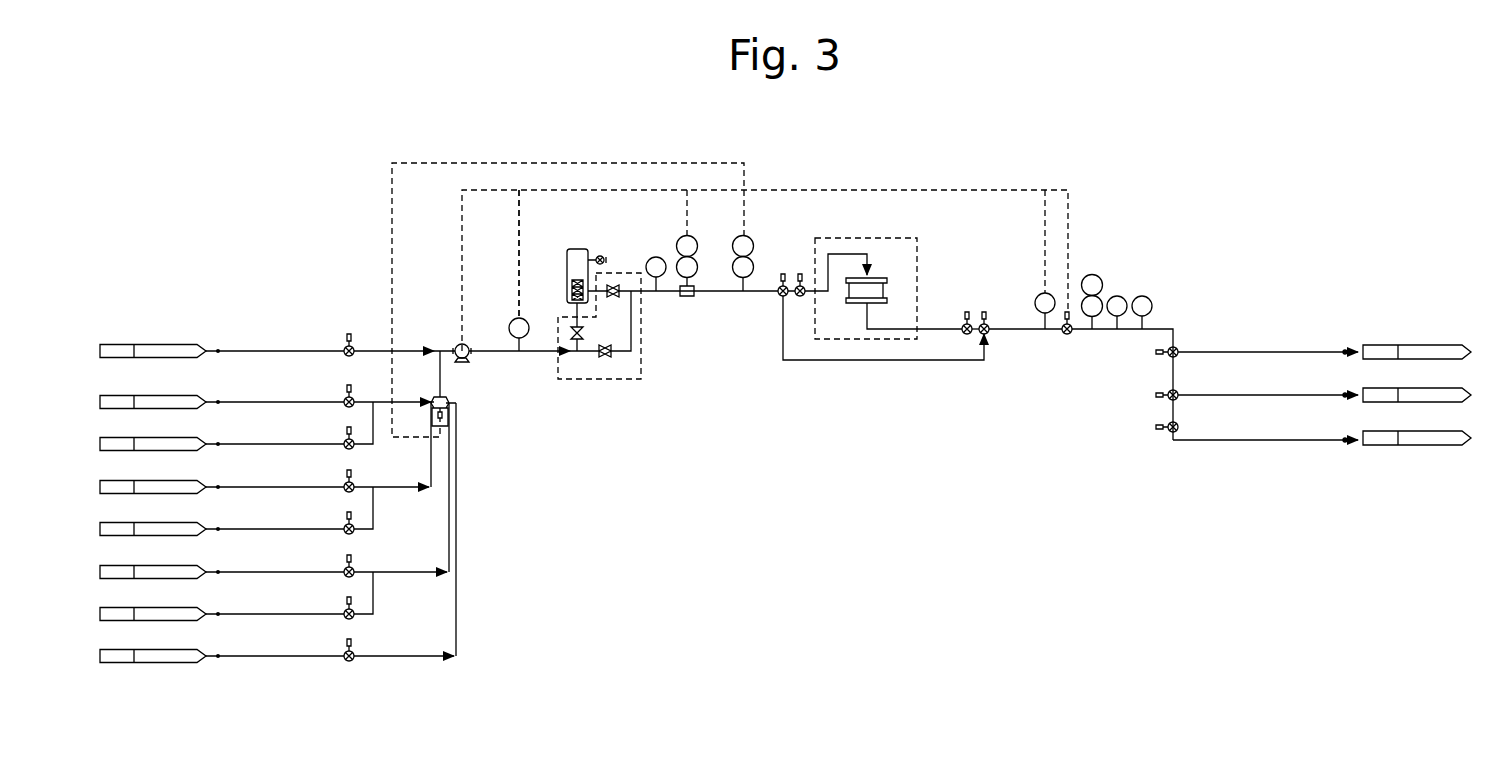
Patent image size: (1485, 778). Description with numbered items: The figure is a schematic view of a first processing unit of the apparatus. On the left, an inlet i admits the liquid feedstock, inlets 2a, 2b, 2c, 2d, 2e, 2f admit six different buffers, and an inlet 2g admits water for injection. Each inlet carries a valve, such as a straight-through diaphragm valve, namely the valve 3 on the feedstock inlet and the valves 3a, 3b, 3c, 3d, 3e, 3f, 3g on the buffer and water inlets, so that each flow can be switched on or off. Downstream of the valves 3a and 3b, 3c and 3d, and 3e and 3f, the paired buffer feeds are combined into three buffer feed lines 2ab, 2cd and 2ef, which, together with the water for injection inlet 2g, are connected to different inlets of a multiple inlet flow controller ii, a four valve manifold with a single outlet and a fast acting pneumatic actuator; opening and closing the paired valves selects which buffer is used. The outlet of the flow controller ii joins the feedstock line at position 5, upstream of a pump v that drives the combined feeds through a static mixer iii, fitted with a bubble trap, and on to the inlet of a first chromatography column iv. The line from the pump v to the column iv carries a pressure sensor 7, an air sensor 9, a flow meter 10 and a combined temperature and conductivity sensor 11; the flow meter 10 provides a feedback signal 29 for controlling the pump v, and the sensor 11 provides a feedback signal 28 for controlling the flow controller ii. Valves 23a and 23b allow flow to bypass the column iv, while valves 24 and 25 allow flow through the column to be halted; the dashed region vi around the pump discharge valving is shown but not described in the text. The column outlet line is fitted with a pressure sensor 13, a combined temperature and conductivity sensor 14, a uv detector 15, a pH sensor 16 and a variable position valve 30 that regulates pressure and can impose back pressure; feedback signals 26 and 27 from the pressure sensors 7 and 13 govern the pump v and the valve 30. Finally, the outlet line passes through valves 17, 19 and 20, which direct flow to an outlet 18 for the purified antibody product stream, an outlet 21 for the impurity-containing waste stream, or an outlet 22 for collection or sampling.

The inlet for the liquid feedstock i is at (114, 338).
The buffer inlet 2a is at (145, 395).
The buffer inlet 2b is at (176, 437).
The buffer inlet 2c is at (183, 480).
The buffer inlet 2d is at (183, 522).
The buffer inlet 2e is at (118, 580).
The buffer inlet 2f is at (153, 622).
The inlet for water for injection 2g is at (192, 664).
The buffer feed line 2ab is at (412, 414).
The buffer feed line 2cd is at (410, 491).
The buffer feed line 2ef is at (428, 576).
The valve 3 is at (349, 334).
The valve 3a is at (349, 385).
The valve 3b is at (352, 428).
The valve 3c is at (346, 471).
The valve 3d is at (345, 525).
The valve 3e is at (355, 577).
The valve 3f is at (355, 620).
The valve 3g is at (349, 665).
The position of fluid connection with the feed 5 is at (440, 345).
The pump v is at (456, 340).
The pressure sensor 7 is at (514, 320).
The multiple inlet flow controller ii is at (455, 402).
The static mixer iii is at (562, 264).
The bypass valve unit vi is at (605, 383).
The air sensor 9 is at (651, 258).
The flow meter 10 is at (687, 298).
The combined temperature and conductivity sensor 11 is at (752, 240).
The feedback signal 27 is at (518, 205).
The feedback signal 28 is at (614, 163).
The feedback signal 29 is at (687, 210).
The feedback signal 26 is at (1044, 213).
The first chromatography column iv is at (889, 236).
The valve 23a is at (781, 300).
The valve 24 is at (800, 298).
The valve 25 is at (964, 337).
The valve 23b is at (983, 340).
The variable position valve 30 is at (1064, 336).
The pressure sensor 13 is at (1037, 296).
The combined temperature and conductivity sensor 14 is at (1092, 275).
The uv detector 15 is at (1117, 295).
The pH sensor 16 is at (1149, 298).
The valve 17 is at (1179, 348).
The valve 19 is at (1179, 392).
The valve 20 is at (1167, 432).
The outlet for the product stream 18 is at (1432, 345).
The outlet for the waste stream 21 is at (1378, 388).
The outlet 22 is at (1415, 446).